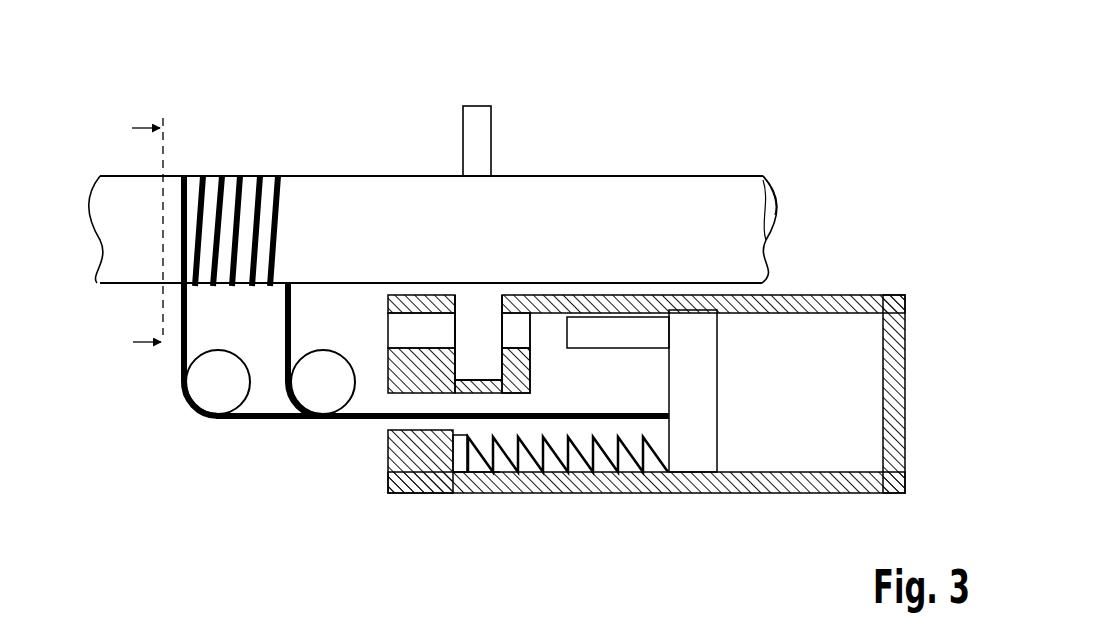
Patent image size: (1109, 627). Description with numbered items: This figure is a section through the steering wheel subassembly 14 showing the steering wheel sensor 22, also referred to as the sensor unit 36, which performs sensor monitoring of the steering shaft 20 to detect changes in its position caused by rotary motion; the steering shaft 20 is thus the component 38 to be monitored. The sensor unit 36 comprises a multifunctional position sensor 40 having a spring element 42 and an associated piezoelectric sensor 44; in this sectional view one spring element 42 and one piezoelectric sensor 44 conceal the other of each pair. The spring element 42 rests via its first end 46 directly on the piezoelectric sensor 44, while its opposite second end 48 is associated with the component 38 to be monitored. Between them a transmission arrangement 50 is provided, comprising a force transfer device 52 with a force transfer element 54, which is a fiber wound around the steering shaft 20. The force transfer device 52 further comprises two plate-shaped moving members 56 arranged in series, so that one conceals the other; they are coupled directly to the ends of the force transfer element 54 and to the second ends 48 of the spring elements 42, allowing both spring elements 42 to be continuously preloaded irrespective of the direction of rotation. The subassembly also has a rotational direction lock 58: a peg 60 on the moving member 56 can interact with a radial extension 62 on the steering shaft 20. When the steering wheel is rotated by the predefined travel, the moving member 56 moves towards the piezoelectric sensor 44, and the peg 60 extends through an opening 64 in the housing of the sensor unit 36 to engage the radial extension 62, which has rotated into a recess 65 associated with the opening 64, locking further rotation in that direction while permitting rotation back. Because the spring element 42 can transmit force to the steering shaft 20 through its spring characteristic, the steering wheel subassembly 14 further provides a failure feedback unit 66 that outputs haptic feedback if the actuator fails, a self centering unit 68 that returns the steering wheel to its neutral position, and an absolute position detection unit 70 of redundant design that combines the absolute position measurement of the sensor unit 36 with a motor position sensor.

The steering wheel subassembly 14 is at (179, 116).
The steering shaft 20 is at (322, 205).
The steering wheel sensor 22 is at (613, 145).
The sensor unit 36 is at (671, 145).
The component to be monitored 38 is at (382, 186).
The multifunctional position sensor 40 is at (610, 345).
The spring element 42 is at (523, 460).
The piezoelectric sensor 44 is at (458, 467).
The first end 46 is at (475, 504).
The second end 48 is at (648, 504).
The transmission arrangement 50 is at (264, 428).
The force transfer device 52 is at (185, 413).
The force transfer element 54 is at (183, 332).
The moving member 56 is at (702, 392).
The rotational direction lock 58 is at (782, 262).
The peg 60 is at (617, 322).
The radial extension 62 is at (477, 122).
The opening 64 is at (514, 312).
The recess 65 is at (467, 300).
The failure feedback unit 66 is at (854, 138).
The self centering unit 68 is at (797, 117).
The absolute position detection unit 70 is at (730, 87).